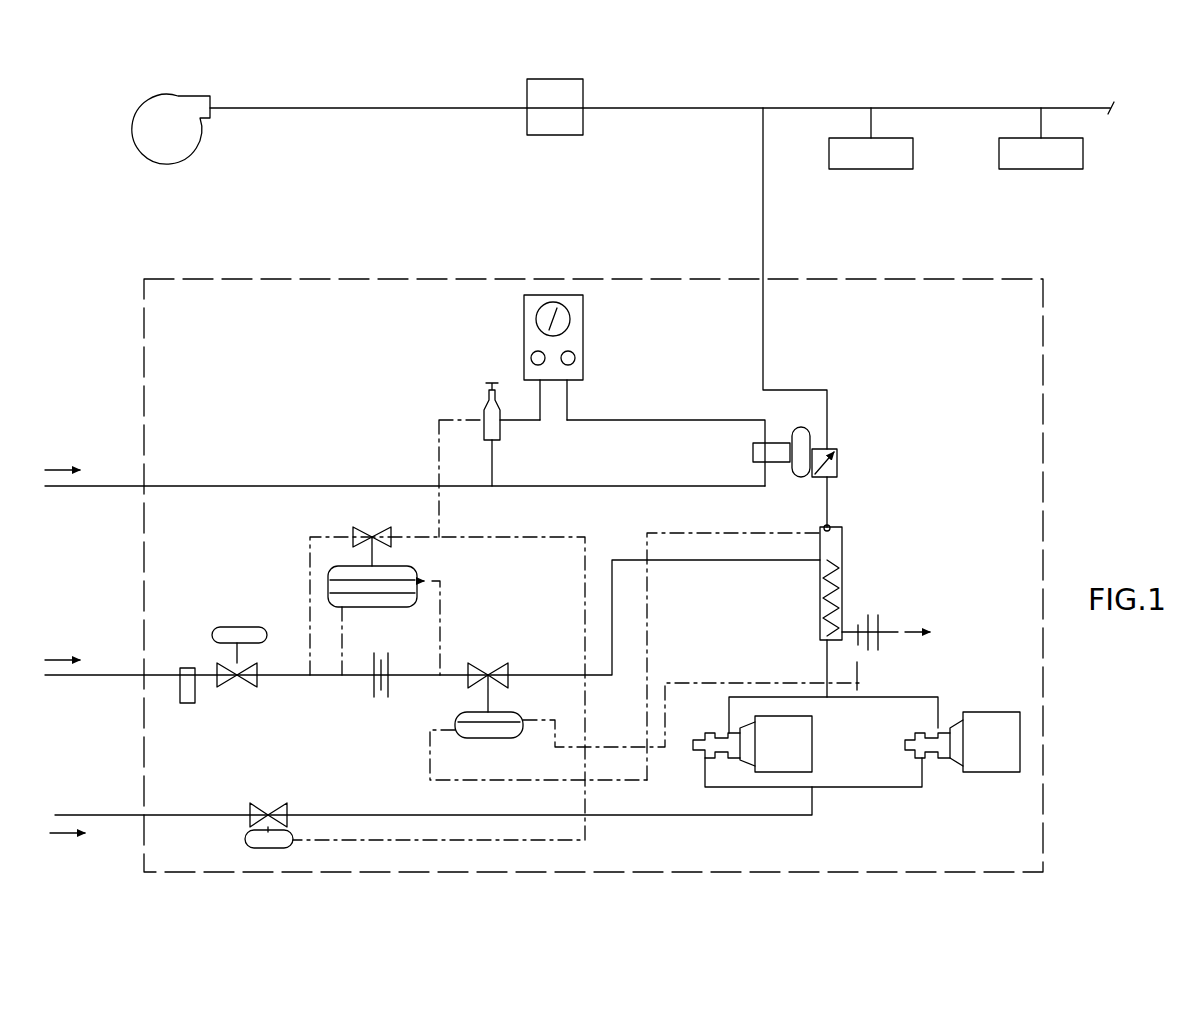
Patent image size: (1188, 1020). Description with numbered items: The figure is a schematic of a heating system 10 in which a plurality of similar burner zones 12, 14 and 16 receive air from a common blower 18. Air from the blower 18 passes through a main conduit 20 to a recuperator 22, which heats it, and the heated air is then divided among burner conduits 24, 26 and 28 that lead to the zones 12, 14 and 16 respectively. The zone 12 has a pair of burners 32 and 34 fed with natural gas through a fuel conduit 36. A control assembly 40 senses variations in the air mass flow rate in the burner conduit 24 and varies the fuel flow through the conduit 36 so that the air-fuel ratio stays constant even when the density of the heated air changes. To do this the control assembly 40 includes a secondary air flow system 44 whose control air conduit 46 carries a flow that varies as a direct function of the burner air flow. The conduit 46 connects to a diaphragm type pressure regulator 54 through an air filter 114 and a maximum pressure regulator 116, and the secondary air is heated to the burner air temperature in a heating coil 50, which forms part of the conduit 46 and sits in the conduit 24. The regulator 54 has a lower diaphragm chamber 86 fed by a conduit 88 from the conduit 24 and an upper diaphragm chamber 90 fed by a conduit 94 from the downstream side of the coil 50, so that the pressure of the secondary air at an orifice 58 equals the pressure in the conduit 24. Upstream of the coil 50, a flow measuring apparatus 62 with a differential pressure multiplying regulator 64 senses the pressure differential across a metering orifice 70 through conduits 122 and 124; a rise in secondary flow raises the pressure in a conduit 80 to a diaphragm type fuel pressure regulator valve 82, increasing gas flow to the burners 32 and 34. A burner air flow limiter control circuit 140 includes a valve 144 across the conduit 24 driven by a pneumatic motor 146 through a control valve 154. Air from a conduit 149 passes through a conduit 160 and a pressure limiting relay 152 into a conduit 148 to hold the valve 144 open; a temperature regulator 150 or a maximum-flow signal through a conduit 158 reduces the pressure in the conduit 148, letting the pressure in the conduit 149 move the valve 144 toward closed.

The heating system 10 is at (66, 99).
The burner zone 12 is at (98, 319).
The burner zone 14 is at (905, 156).
The burner zone 16 is at (1078, 156).
The blower 18 is at (183, 96).
The main conduit 20 is at (375, 108).
The recuperator 22 is at (555, 79).
The burner conduit 24 is at (763, 165).
The burner conduit 26 is at (875, 116).
The burner conduit 28 is at (1045, 116).
The burner 32 is at (806, 741).
The burner 34 is at (1010, 763).
The fuel conduit 36 is at (755, 816).
The control assembly 40 is at (193, 360).
The secondary air flow system 44 is at (200, 722).
The secondary air conduit 46 is at (760, 561).
The heating coil 50 is at (842, 580).
The diaphragm type pressure regulator 54 is at (514, 681).
The orifice 58 is at (878, 621).
The flow measuring apparatus 62 is at (338, 693).
The differential pressure multiplying regulator 64 is at (328, 580).
The metering orifice 70 is at (380, 698).
The conduit 80 is at (508, 541).
The diaphragm type fuel pressure regulator valve 82 is at (272, 812).
The lower diaphragm chamber 86 is at (500, 738).
The conduit 88 is at (652, 605).
The upper diaphragm chamber 90 is at (505, 713).
The conduit 94 is at (736, 683).
The air filter 114 is at (180, 676).
The maximum pressure regulator 116 is at (216, 637).
The conduit 122 is at (343, 642).
The conduit 124 is at (441, 632).
The burner air flow limiter control circuit 140 is at (412, 411).
The valve 144 is at (837, 462).
The pneumatic motor 146 is at (799, 431).
The conduit 148 is at (695, 420).
The conduit 149 is at (632, 486).
The temperature regulator 150 is at (583, 331).
The pressure limiting relay 152 is at (487, 400).
The control valve 154 is at (752, 452).
The conduit 158 is at (439, 456).
The conduit 160 is at (497, 463).